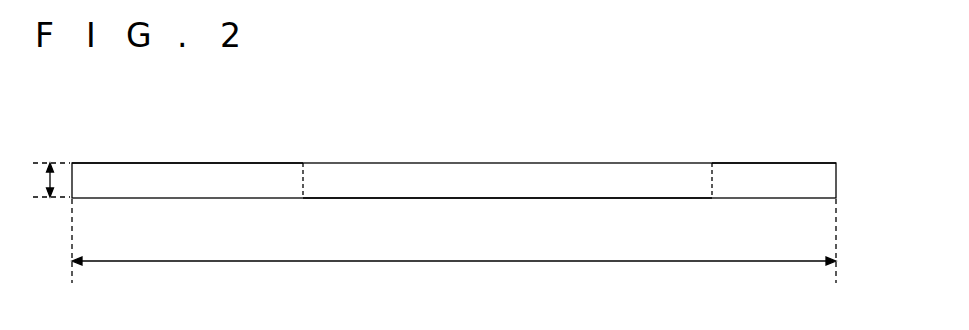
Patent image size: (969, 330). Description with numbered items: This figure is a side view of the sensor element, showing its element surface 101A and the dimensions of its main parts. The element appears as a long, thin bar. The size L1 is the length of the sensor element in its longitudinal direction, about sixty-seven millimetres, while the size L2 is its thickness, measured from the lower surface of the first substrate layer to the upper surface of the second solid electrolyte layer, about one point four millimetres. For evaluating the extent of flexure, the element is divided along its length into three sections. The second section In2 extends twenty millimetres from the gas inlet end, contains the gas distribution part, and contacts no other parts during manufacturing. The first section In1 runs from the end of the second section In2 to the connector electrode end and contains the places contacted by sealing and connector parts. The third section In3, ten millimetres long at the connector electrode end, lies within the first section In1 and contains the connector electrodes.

The element surface 101A is at (488, 178).
The first section In1 is at (835, 199).
The second section In2 is at (302, 163).
The third section In3 is at (835, 163).
The size L1 is at (454, 246).
The size L2 is at (41, 180).